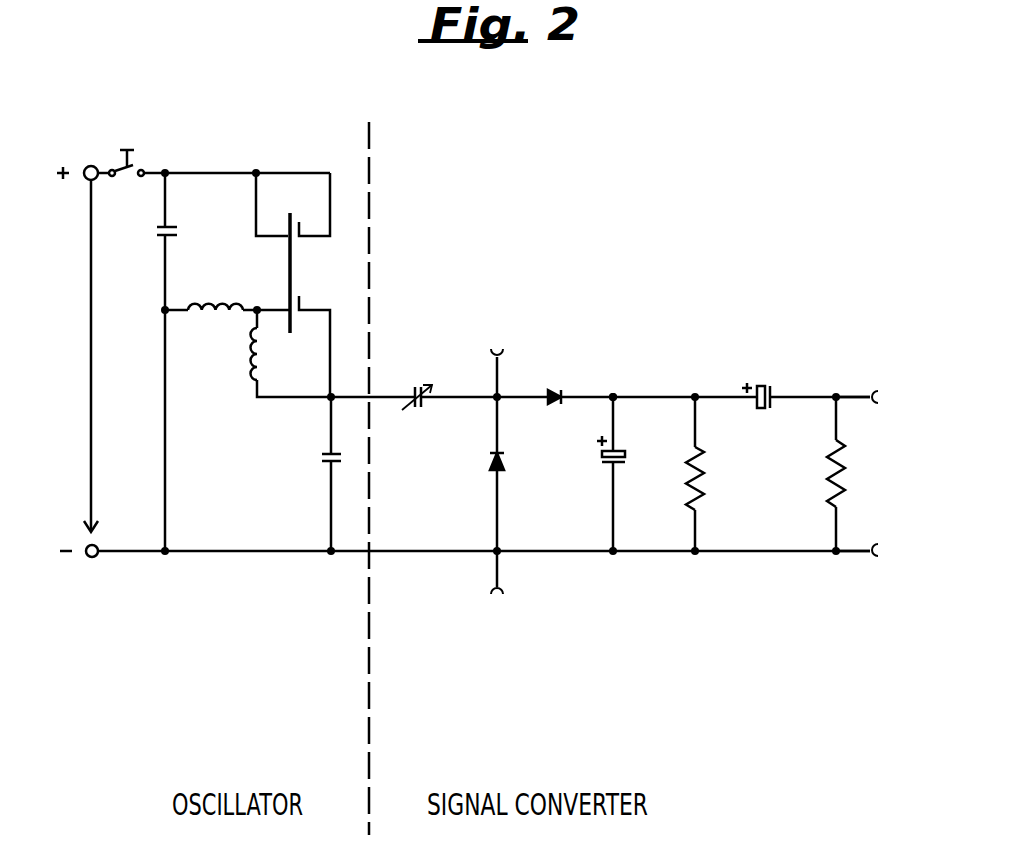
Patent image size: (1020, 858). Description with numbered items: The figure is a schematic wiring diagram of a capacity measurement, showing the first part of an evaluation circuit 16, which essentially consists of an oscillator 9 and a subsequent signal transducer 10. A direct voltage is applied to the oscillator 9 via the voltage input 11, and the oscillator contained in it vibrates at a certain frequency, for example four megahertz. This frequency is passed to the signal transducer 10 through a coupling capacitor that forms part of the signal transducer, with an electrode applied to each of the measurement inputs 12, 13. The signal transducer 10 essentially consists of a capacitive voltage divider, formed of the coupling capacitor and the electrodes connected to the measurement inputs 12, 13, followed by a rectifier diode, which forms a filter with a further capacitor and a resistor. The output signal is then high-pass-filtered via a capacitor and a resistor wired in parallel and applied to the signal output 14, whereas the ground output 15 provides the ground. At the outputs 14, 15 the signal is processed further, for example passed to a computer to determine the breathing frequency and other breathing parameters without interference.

The oscillator 9 is at (250, 578).
The signal transducer 10 is at (694, 585).
The voltage input 11 is at (92, 288).
The measurement input 12 is at (496, 351).
The measurement input 13 is at (501, 593).
The signal output 14 is at (878, 390).
The ground output 15 is at (880, 558).
The evaluation circuit 16 is at (614, 348).